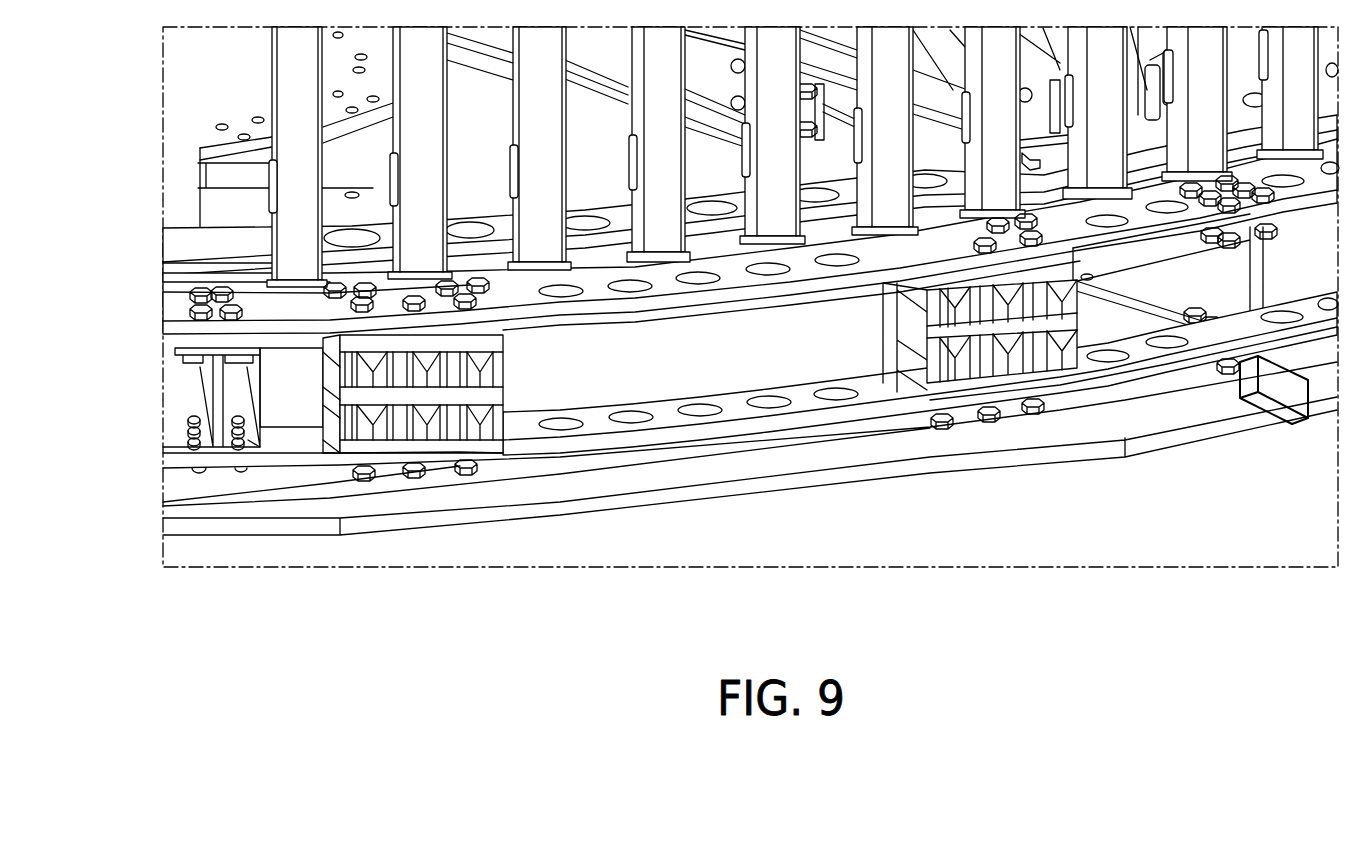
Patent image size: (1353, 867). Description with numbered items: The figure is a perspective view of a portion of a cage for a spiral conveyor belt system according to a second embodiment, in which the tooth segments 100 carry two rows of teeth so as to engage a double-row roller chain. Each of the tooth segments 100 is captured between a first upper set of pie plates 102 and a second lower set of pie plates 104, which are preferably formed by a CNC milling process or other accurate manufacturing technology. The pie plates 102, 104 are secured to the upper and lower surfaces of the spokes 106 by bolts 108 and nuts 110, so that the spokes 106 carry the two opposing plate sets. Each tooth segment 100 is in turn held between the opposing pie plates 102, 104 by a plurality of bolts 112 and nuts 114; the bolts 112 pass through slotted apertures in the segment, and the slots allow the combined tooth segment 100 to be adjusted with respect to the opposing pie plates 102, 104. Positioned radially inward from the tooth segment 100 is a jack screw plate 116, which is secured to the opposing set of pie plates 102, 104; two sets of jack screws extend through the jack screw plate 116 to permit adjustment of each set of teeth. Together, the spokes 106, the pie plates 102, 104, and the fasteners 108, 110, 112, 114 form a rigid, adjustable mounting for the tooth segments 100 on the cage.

The tooth segments 100 is at (442, 480).
The first upper set of pie plates 102 is at (700, 300).
The second lower set of pie plates 104 is at (733, 413).
The spokes 106 is at (227, 388).
The bolts 108 is at (248, 440).
The nuts 110 is at (237, 474).
The bolts 112 is at (485, 297).
The nuts 114 is at (477, 472).
The jack screw plate 116 is at (888, 377).